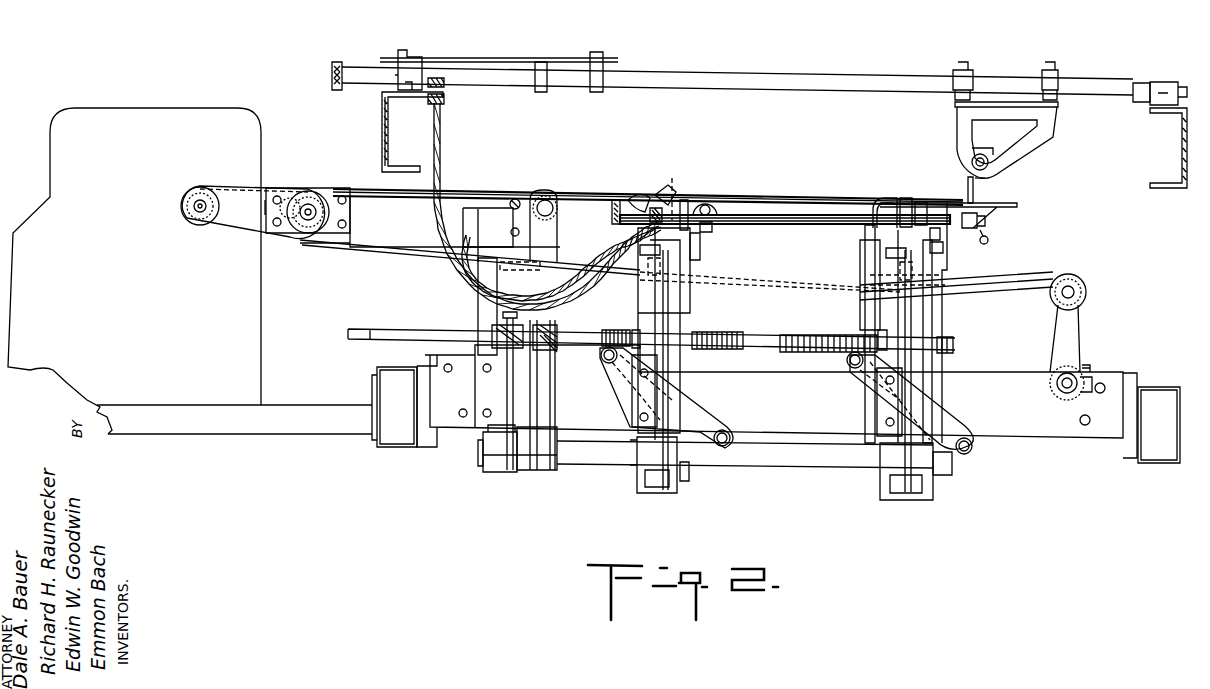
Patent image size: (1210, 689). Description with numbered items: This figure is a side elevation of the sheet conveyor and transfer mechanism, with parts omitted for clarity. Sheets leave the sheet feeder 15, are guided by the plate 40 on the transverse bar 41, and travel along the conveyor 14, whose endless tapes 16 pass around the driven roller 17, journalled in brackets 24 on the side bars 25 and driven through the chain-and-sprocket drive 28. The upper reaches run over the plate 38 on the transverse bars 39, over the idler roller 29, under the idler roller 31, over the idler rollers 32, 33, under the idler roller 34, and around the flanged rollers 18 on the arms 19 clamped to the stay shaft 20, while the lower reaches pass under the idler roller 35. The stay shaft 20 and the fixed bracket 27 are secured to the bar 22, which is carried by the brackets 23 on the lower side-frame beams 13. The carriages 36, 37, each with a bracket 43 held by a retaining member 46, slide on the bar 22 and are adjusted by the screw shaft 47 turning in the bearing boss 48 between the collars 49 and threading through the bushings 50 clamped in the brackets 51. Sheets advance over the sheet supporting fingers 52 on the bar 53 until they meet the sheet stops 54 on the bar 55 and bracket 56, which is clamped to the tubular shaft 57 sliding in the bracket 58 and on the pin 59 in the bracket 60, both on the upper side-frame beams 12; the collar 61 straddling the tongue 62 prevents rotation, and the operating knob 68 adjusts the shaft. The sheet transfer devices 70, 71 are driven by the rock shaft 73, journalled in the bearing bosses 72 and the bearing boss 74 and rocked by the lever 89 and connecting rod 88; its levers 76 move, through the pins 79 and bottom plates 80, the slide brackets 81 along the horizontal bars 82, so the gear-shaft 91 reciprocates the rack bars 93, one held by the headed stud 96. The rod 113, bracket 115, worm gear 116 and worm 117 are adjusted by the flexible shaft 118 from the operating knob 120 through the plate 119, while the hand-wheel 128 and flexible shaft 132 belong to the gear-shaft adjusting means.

The upper side-frame beams 12 is at (382, 127).
The lower side-frame beams 13 is at (390, 447).
The conveyor 14 is at (370, 183).
The sheet feeder 15 is at (179, 100).
The endless tapes 16 is at (470, 198).
The driven roller 17 is at (303, 238).
The flanged rollers 18 is at (1073, 278).
The arms 19 is at (1075, 329).
The stay shaft 20 is at (1057, 402).
The bar 22 is at (1010, 442).
The brackets 23 is at (432, 442).
The brackets 24 is at (350, 233).
The side bars 25 is at (352, 252).
The bracket 27 is at (478, 305).
The chain-and-sprocket drive 28 is at (233, 189).
The idler roller 29 is at (545, 222).
The idler roller 31 is at (718, 279).
The idler roller 32 is at (722, 200).
The idler roller 33 is at (868, 202).
The idler roller 34 is at (946, 270).
The idler roller 35 is at (546, 273).
The carriage 36 is at (714, 326).
The carriage 37 is at (852, 307).
The plate 38 is at (402, 200).
The transverse bars 39 is at (354, 216).
The guide plate 40 is at (277, 188).
The transverse bar 41 is at (272, 207).
The bracket 43 is at (698, 390).
The retaining member 46 is at (622, 386).
The screw shaft 47 is at (410, 328).
The bearing boss 48 is at (511, 312).
The collars 49 is at (490, 322).
The threaded bushings 50 is at (634, 328).
The brackets 51 is at (636, 400).
The sheet supporting fingers 52 is at (1012, 206).
The bar 53 is at (986, 222).
The sheet stops 54 is at (974, 195).
The bar 55 is at (988, 176).
The bracket 56 is at (1050, 128).
The tubular shaft 57 is at (784, 72).
The bracket 58 is at (415, 56).
The pin 59 is at (1141, 82).
The bracket 60 is at (1163, 80).
The collar 61 is at (598, 96).
The tongue 62 is at (522, 58).
The operating knob 68 is at (327, 66).
The sheet transfer device 70 is at (722, 247).
The sheet transfer device 71 is at (868, 241).
The bearing bosses 72 is at (653, 488).
The rock shaft 73 is at (755, 468).
The bearing boss 74 is at (503, 474).
The levers 76 is at (684, 483).
The pins 79 is at (702, 257).
The bottom plates 80 is at (640, 250).
The slide brackets 81 is at (700, 208).
The horizontal bars 82 is at (652, 262).
The connecting rod 88 is at (548, 356).
The lever 89 is at (550, 472).
The gear-shaft 91 is at (790, 226).
The rack bars 93 is at (682, 203).
The headed stud 96 is at (921, 202).
The rod 113 is at (664, 188).
The bracket 115 is at (644, 196).
The worm gear 116 is at (674, 178).
The worm 117 is at (652, 190).
The flexible shaft 118 is at (592, 258).
The plate 119 is at (450, 100).
The operating knob 120 is at (446, 80).
The hand-wheel 128 is at (612, 213).
The flexible shaft 132 is at (463, 272).